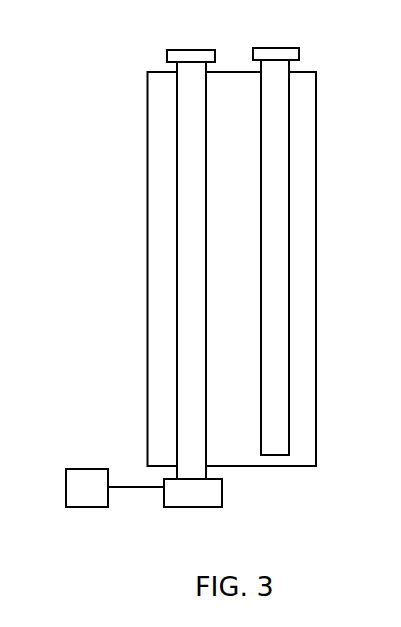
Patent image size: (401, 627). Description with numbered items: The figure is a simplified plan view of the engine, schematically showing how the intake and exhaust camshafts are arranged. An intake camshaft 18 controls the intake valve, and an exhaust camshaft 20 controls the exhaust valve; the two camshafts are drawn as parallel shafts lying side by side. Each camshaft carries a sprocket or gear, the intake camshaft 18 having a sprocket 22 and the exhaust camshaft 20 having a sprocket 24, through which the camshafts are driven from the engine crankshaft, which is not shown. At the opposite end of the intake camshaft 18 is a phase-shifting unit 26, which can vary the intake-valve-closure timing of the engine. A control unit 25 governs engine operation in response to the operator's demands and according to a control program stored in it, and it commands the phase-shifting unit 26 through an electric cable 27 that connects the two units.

The intake camshaft 18 is at (185, 100).
The exhaust camshaft 20 is at (287, 100).
The sprocket 22 is at (168, 52).
The sprocket 24 is at (300, 55).
The control unit 25 is at (80, 478).
The phase-shifting unit 26 is at (213, 497).
The electric cable 27 is at (135, 488).